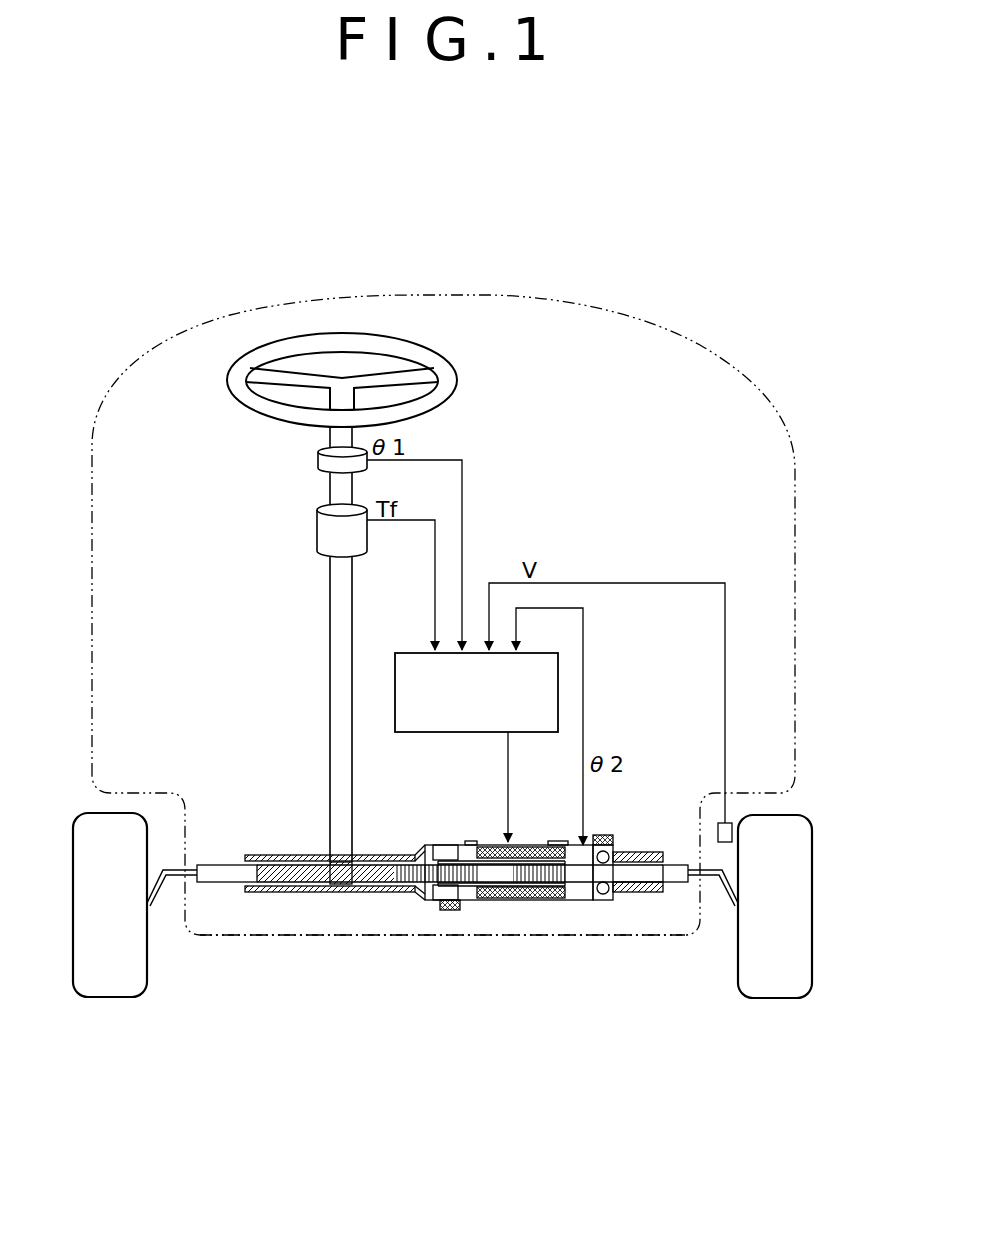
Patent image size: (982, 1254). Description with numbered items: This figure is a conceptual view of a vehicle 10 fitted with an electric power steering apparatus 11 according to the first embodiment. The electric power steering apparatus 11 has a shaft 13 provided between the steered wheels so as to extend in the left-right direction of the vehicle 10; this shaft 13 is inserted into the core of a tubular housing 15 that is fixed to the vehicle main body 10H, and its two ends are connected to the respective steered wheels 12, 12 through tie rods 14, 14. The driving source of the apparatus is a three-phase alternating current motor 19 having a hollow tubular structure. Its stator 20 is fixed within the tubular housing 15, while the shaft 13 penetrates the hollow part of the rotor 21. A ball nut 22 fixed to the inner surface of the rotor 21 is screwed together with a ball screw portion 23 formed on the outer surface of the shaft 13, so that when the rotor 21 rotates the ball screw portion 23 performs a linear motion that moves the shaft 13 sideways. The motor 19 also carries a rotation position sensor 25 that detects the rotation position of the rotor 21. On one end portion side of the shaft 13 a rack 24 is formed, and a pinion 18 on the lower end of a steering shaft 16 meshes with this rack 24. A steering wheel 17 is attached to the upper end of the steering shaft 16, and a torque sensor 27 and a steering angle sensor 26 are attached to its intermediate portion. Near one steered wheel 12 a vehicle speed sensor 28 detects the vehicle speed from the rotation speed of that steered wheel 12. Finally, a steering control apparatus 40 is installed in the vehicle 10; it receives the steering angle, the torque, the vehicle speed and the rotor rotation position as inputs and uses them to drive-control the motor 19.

The vehicle 10 is at (658, 322).
The vehicle main body 10H is at (250, 938).
The electric power steering apparatus 11 is at (267, 845).
The steered wheel 12 is at (103, 985).
The shaft 13 is at (392, 884).
The tie rod 14 is at (175, 880).
The tubular housing 15 is at (655, 895).
The steering shaft 16 is at (345, 790).
The steering wheel 17 is at (450, 372).
The pinion 18 is at (346, 884).
The three-phase alternating current motor 19 is at (483, 959).
The stator 20 is at (518, 887).
The rotor 21 is at (550, 887).
The ball nut 22 is at (477, 901).
The ball screw portion 23 is at (434, 911).
The rack 24 is at (300, 889).
The rotation position sensor 25 is at (585, 901).
The steering angle sensor 26 is at (318, 466).
The torque sensor 27 is at (318, 537).
The vehicle speed sensor 28 is at (718, 833).
The steering control apparatus 40 is at (393, 690).